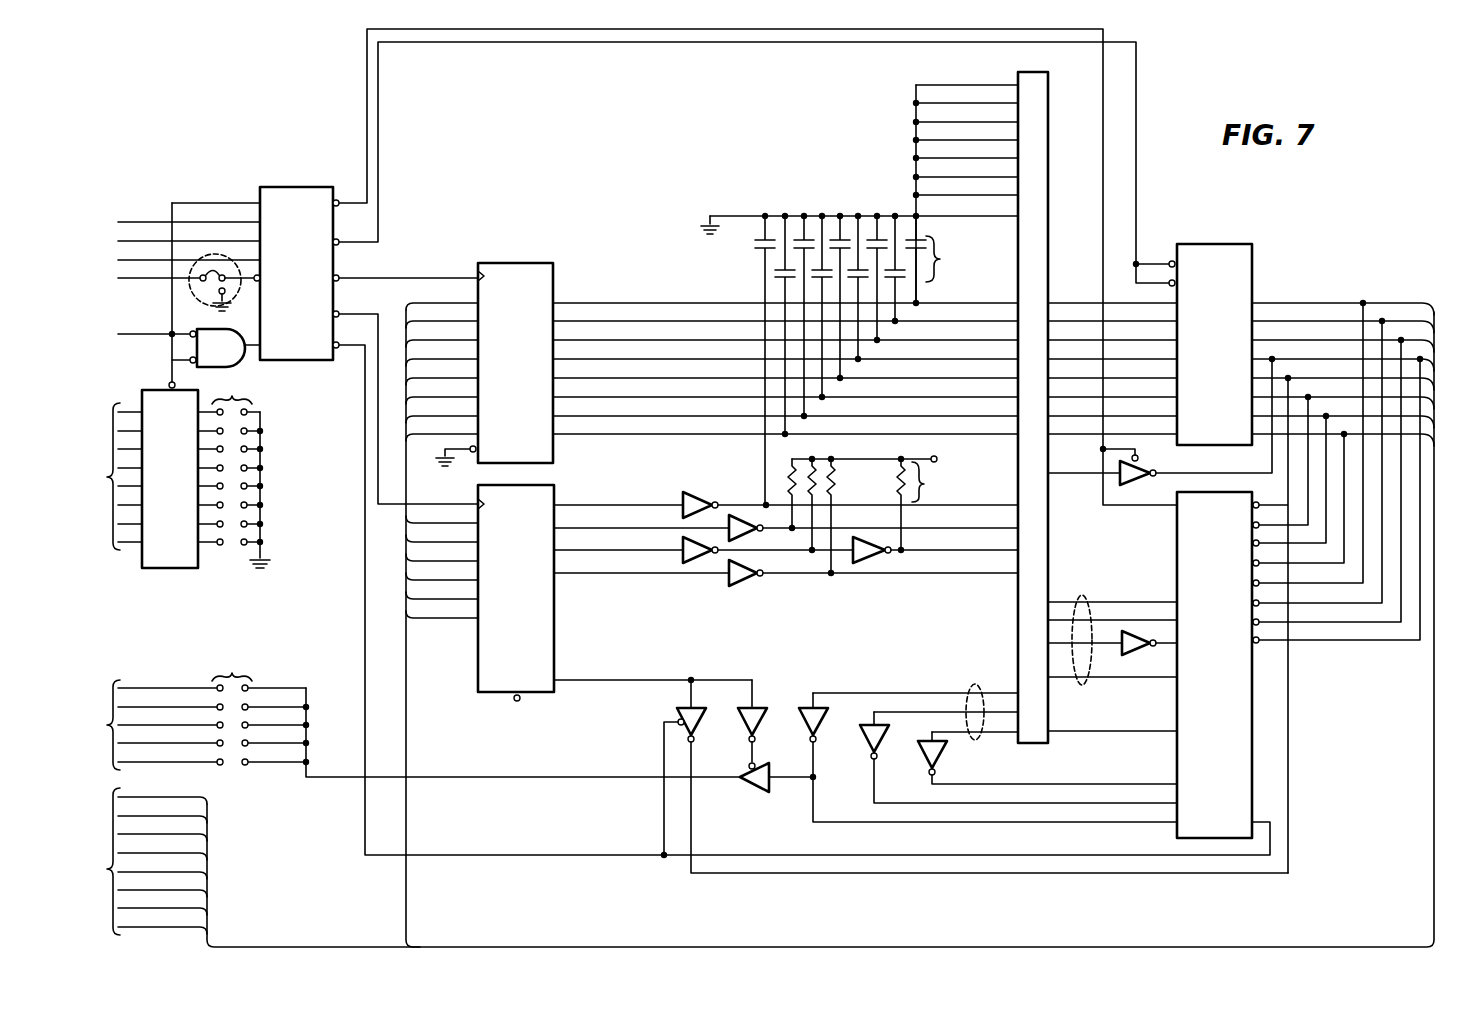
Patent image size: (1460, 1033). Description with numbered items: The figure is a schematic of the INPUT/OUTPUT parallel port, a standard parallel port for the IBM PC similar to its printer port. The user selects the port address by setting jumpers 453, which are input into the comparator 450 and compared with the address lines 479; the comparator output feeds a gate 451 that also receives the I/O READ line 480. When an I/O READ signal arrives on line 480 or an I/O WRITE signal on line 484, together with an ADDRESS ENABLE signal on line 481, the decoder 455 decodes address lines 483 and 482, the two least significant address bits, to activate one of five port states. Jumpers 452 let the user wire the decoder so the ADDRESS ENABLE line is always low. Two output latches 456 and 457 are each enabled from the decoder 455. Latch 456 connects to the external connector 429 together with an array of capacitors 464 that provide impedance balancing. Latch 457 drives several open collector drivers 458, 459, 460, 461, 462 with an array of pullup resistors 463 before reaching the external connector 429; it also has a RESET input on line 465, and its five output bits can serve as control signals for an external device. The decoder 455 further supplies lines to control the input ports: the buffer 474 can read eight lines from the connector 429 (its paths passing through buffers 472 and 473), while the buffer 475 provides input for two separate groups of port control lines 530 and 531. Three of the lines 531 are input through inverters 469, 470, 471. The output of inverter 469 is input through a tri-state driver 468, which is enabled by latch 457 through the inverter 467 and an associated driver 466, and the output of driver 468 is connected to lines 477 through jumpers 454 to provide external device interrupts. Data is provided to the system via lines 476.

The external connector 429 is at (1040, 72).
The comparator 450 is at (170, 385).
The AND gate 451 is at (216, 348).
The jumpers 452 is at (192, 292).
The jumpers 453 is at (234, 470).
The jumpers 454 is at (232, 707).
The decoder 455 is at (721, 443).
The output latch 456 is at (712, 605).
The output latch 457 is at (579, 588).
The open collector driver 458 is at (694, 492).
The open collector driver 459 is at (750, 540).
The open collector driver 460 is at (684, 562).
The open collector driver 461 is at (750, 588).
The open collector driver 462 is at (886, 558).
The pullup resistors 463 is at (877, 516).
The capacitors 464 is at (859, 359).
The RESET input line 465 is at (517, 701).
The tri-state inverter 466 is at (717, 716).
The inverter 467 is at (778, 716).
The tri-state driver 468 is at (763, 793).
The inverter 469 is at (839, 716).
The inverter 470 is at (899, 733).
The inverter 471 is at (957, 749).
The tri-state buffer 472 is at (1146, 463).
The buffer 473 is at (1130, 659).
The buffer 474 is at (1241, 558).
The buffer 475 is at (1153, 665).
The lines 476 is at (752, 629).
The lines 477 is at (407, 728).
The address lines 479 is at (108, 476).
The I/O READ line 480 is at (124, 334).
The ADDRESS ENABLE line 481 is at (121, 278).
The address line 482 is at (121, 260).
The address line 483 is at (121, 241).
The I/O WRITE line 484 is at (121, 222).
The port control lines 530 is at (1086, 597).
The port control lines 531 is at (980, 684).